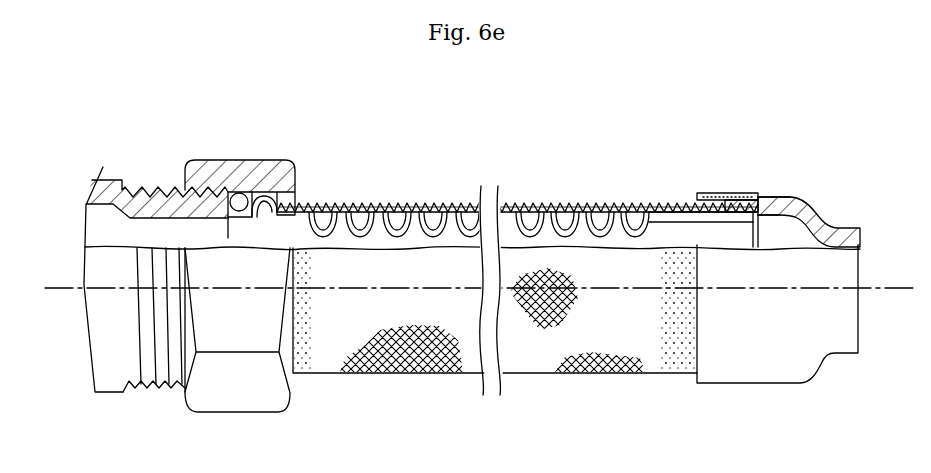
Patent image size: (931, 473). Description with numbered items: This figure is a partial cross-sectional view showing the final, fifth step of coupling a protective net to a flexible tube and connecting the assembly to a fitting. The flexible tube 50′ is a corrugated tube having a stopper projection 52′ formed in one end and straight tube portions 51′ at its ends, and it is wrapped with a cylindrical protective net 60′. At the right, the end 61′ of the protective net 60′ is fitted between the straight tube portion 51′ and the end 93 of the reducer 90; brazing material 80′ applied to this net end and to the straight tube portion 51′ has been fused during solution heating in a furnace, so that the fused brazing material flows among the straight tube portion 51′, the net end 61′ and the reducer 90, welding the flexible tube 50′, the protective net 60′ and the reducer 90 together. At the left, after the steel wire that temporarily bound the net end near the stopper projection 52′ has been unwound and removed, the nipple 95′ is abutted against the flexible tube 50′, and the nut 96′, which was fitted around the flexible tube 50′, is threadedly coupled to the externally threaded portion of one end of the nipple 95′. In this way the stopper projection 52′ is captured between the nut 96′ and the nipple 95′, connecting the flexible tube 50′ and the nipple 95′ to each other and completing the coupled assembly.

The nipple 95′ is at (120, 183).
The nut 96′ is at (200, 176).
The stopper projection 52′ is at (262, 197).
The flexible tube 50′ is at (436, 212).
The protective net 60′ is at (548, 197).
The end of the protective net 61′ is at (668, 207).
The brazing material 80′ is at (703, 195).
The end of the reducer 93 is at (742, 205).
The straight tube portion 51′ is at (773, 200).
The reducer 90 is at (812, 217).